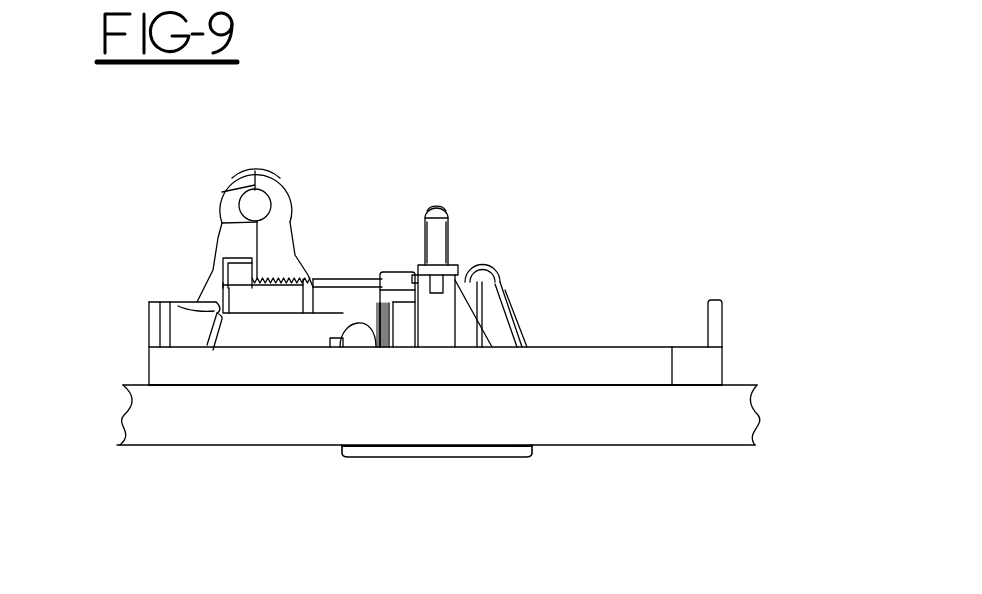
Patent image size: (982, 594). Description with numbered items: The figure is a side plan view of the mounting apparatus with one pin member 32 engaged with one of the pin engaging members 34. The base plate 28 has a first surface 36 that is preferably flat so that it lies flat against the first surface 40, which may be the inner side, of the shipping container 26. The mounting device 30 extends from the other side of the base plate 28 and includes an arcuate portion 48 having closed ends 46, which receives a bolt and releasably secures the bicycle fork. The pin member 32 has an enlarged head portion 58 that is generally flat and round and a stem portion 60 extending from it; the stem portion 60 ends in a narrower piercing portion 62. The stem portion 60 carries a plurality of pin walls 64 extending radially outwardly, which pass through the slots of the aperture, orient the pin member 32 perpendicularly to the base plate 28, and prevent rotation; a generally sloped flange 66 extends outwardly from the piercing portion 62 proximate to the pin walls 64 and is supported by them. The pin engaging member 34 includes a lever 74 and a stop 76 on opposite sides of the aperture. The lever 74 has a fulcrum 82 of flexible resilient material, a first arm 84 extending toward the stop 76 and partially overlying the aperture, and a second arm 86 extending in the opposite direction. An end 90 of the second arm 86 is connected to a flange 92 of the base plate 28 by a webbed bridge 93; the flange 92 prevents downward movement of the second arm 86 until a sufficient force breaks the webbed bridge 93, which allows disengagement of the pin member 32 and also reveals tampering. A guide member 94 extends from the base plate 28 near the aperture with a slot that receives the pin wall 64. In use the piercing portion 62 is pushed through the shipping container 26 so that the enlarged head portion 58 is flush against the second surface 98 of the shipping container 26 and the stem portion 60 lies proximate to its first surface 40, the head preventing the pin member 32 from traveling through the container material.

The shipping container 26 is at (688, 418).
The base plate 28 is at (702, 357).
The mounting device 30 is at (278, 197).
The pin member 32 is at (440, 240).
The pin engaging member 34 is at (398, 279).
The first surface 36 is at (540, 377).
The first surface 40 is at (732, 382).
The closed ends 46 is at (275, 188).
The arcuate portion 48 is at (265, 178).
The enlarged head portion 58 is at (485, 458).
The stem portion 60 is at (437, 250).
The piercing portion 62 is at (427, 207).
The pin walls 64 is at (472, 287).
The sloped flange 66 is at (421, 266).
The lever 74 is at (218, 315).
The stop 76 is at (503, 308).
The fulcrum 82 is at (378, 318).
The first arm 84 is at (338, 300).
The second arm 86 is at (343, 283).
The end 90 is at (218, 310).
The flange 92 is at (148, 312).
The webbed bridge 93 is at (262, 313).
The guide member 94 is at (438, 317).
The second surface 98 is at (605, 447).